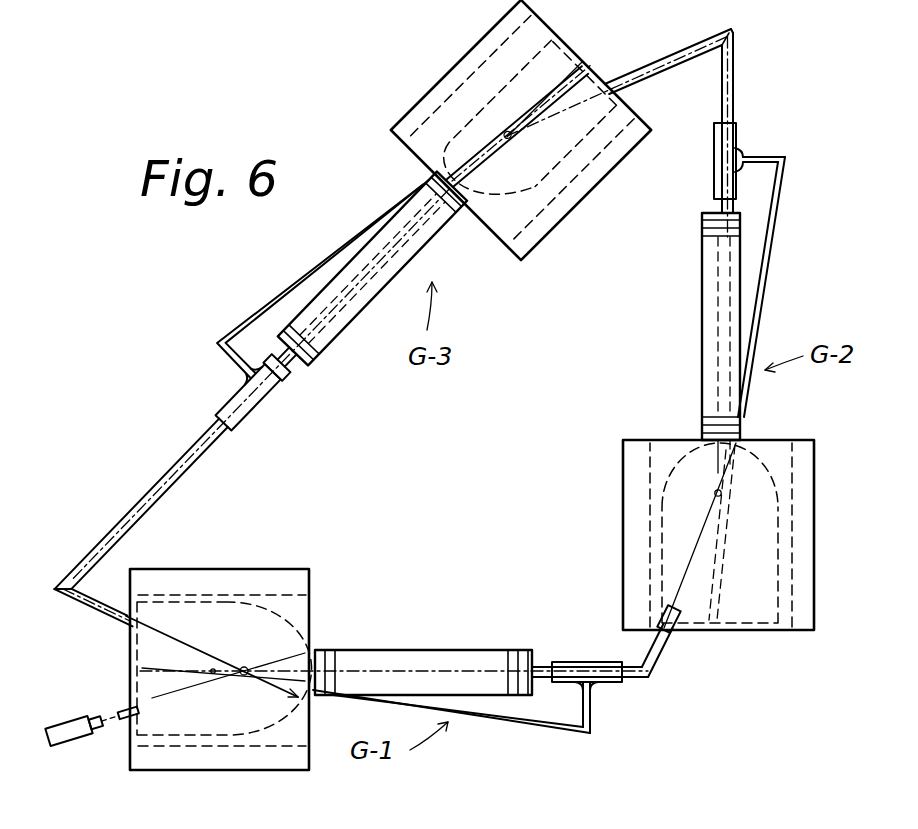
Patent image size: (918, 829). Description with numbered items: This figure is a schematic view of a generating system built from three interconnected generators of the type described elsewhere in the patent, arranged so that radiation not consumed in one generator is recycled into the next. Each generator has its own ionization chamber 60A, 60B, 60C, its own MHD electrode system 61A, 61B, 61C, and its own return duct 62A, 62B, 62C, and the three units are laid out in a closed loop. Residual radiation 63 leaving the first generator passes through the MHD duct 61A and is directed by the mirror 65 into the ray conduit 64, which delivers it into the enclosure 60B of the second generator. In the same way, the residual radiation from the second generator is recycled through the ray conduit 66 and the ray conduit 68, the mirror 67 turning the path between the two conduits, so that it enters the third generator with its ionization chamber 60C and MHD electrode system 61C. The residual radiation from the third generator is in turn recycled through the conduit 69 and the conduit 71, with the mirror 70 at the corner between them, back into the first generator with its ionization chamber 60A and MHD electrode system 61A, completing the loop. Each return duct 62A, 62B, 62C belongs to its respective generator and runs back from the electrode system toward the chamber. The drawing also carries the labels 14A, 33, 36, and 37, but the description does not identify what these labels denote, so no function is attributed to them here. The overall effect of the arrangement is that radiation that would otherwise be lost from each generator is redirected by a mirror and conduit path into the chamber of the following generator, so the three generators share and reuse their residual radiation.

The laser source 14A is at (70, 742).
The support frame member 33 is at (134, 8).
The support frame member 36 is at (786, 8).
The support frame member 37 is at (74, 7).
The ionization chamber 60A is at (240, 623).
The ionization chamber 60B is at (768, 528).
The ionization chamber 60C is at (562, 82).
The MHD electrode system 61A is at (422, 648).
The MHD electrode system 61B is at (702, 286).
The MHD electrode system 61C is at (348, 327).
The return duct 62A is at (514, 722).
The return duct 62B is at (774, 237).
The return duct 62C is at (267, 307).
The residual radiation 63 is at (541, 122).
The ray conduit 64 is at (668, 657).
The mirror 65 is at (650, 680).
The ray conduit 66 is at (722, 82).
The mirror 67 is at (734, 57).
The ray conduit 68 is at (670, 78).
The conduit 69 is at (163, 472).
The mirror 70 is at (73, 577).
The conduit 71 is at (97, 615).